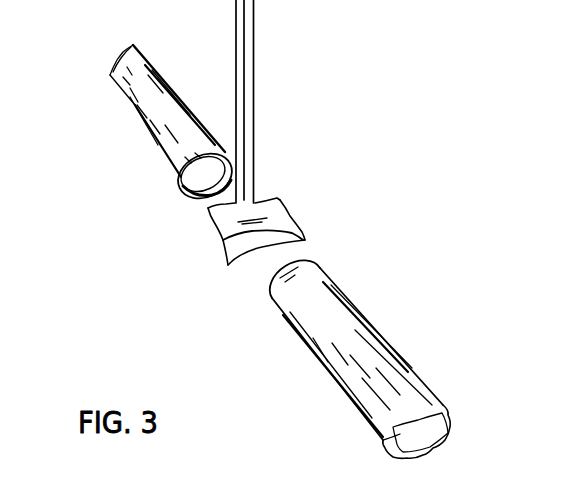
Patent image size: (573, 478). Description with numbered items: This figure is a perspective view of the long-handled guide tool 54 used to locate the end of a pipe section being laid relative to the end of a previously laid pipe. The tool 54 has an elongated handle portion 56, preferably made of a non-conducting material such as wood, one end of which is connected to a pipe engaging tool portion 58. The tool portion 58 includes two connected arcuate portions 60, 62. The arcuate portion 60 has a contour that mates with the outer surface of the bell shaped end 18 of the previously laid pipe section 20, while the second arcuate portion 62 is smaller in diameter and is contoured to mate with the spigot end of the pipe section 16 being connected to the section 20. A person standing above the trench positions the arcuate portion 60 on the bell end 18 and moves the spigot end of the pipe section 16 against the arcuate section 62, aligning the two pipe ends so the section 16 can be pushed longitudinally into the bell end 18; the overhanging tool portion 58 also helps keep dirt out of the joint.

The pipe section 16 is at (360, 310).
The bell shaped end 18 is at (180, 183).
The pipe section 20 is at (127, 107).
The tool 54 is at (288, 101).
The handle portion 56 is at (255, 117).
The pipe engaging tool portion 58 is at (260, 242).
The arcuate portion 60 is at (279, 203).
The arcuate portion 62 is at (227, 260).